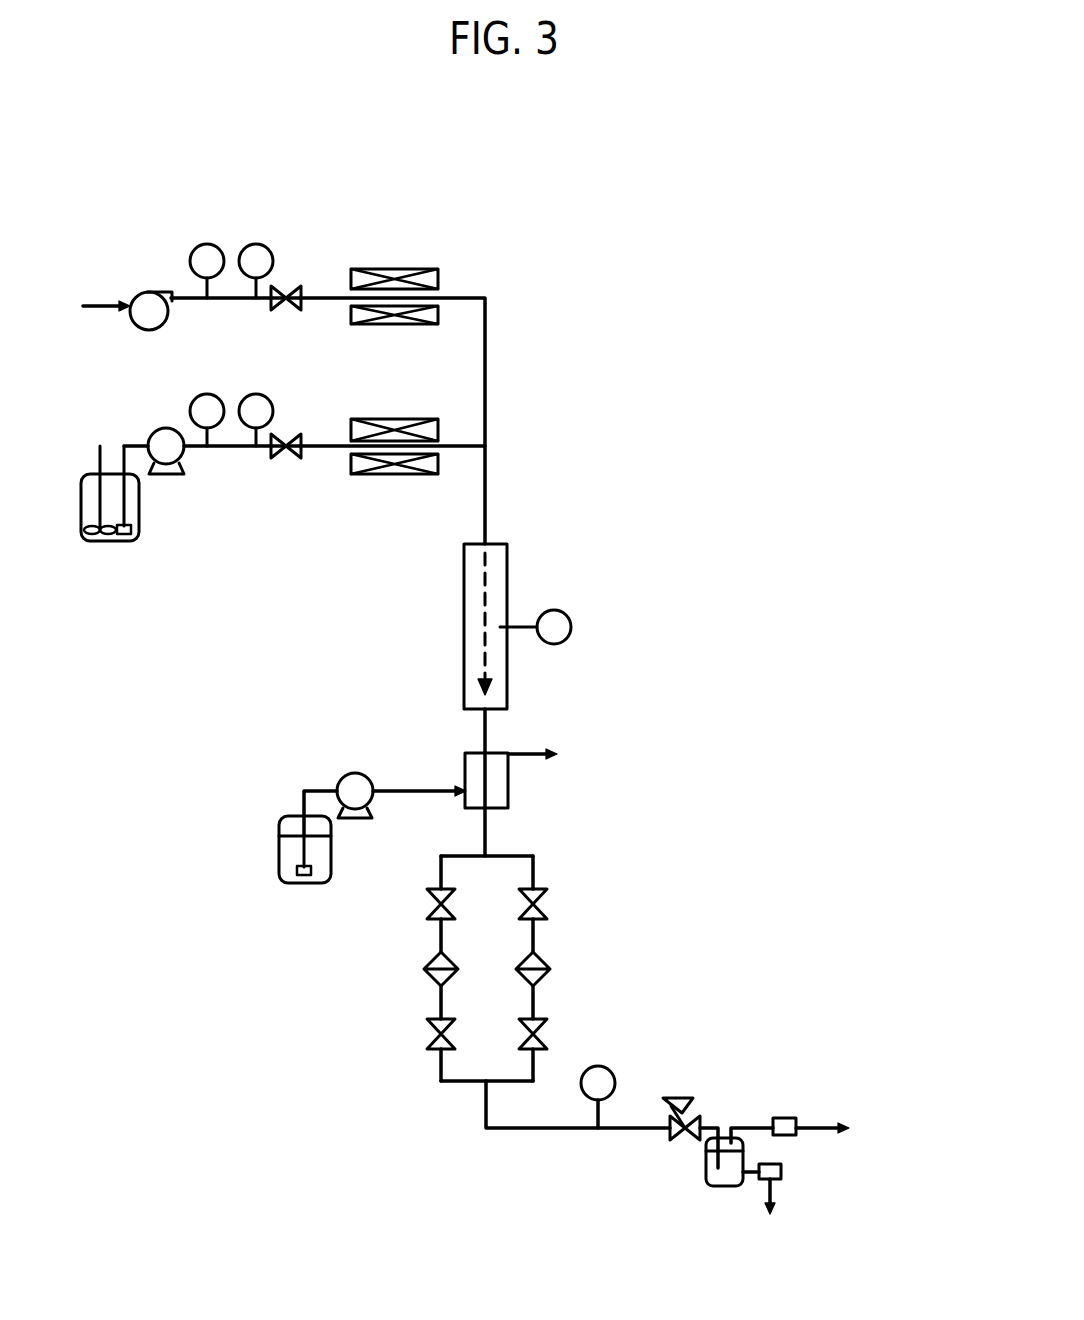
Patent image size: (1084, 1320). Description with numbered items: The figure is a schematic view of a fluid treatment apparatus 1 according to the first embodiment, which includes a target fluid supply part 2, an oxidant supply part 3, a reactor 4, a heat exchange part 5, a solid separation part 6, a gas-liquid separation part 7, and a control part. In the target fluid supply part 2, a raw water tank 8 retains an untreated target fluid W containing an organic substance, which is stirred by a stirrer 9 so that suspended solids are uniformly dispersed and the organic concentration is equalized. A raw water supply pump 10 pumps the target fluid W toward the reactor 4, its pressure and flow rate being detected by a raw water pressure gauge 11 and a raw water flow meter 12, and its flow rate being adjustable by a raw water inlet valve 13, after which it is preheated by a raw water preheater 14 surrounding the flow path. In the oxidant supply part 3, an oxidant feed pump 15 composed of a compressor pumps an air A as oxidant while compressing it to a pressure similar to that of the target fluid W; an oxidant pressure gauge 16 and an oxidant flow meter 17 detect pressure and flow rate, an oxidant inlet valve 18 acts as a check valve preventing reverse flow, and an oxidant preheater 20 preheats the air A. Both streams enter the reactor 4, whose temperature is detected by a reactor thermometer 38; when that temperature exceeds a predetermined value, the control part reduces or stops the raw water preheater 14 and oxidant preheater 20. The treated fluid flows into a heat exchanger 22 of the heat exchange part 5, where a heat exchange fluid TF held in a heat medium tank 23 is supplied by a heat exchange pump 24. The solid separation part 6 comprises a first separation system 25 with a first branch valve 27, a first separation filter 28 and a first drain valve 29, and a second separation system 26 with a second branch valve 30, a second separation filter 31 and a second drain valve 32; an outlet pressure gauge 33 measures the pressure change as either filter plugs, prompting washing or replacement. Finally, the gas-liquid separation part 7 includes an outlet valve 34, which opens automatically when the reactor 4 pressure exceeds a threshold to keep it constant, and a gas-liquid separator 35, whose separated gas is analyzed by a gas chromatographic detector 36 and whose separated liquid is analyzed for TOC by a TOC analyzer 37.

The fluid treatment apparatus 1 is at (553, 466).
The target fluid supply part 2 is at (95, 548).
The oxidant supply part 3 is at (118, 193).
The reactor 4 is at (500, 543).
The heat exchange part 5 is at (228, 778).
The solid separation part 6 is at (585, 848).
The gas-liquid separation part 7 is at (843, 1064).
The raw water tank 8 is at (138, 483).
The stirrer 9 is at (99, 452).
The raw water supply pump 10 is at (163, 427).
The raw water pressure gauge 11 is at (206, 393).
The raw water flow meter 12 is at (256, 393).
The raw water inlet valve 13 is at (296, 433).
The raw water preheater 14 is at (420, 418).
The oxidant feed pump 15 is at (150, 291).
The oxidant pressure gauge 16 is at (206, 243).
The oxidant flow meter 17 is at (256, 243).
The oxidant inlet valve 18 is at (296, 285).
The oxidant preheater 20 is at (420, 268).
The heat exchanger 22 is at (508, 788).
The heat medium tank 23 is at (278, 874).
The heat exchange pump 24 is at (354, 772).
The first separation system 25 is at (543, 934).
The second separation system 26 is at (409, 969).
The first branch valve 27 is at (538, 888).
The first separation filter 28 is at (546, 958).
The first drain valve 29 is at (542, 1036).
The second branch valve 30 is at (452, 905).
The second separation filter 31 is at (452, 957).
The second drain valve 32 is at (452, 1020).
The outlet pressure gauge 33 is at (600, 1065).
The outlet valve 34 is at (680, 1140).
The gas-liquid separator 35 is at (705, 1182).
The gas chromatographic detector 36 is at (778, 1117).
The TOC analyzer 37 is at (781, 1172).
The reactor thermometer 38 is at (553, 609).
The air A is at (96, 305).
The target fluid W is at (136, 520).
The heat exchange fluid TF is at (331, 852).